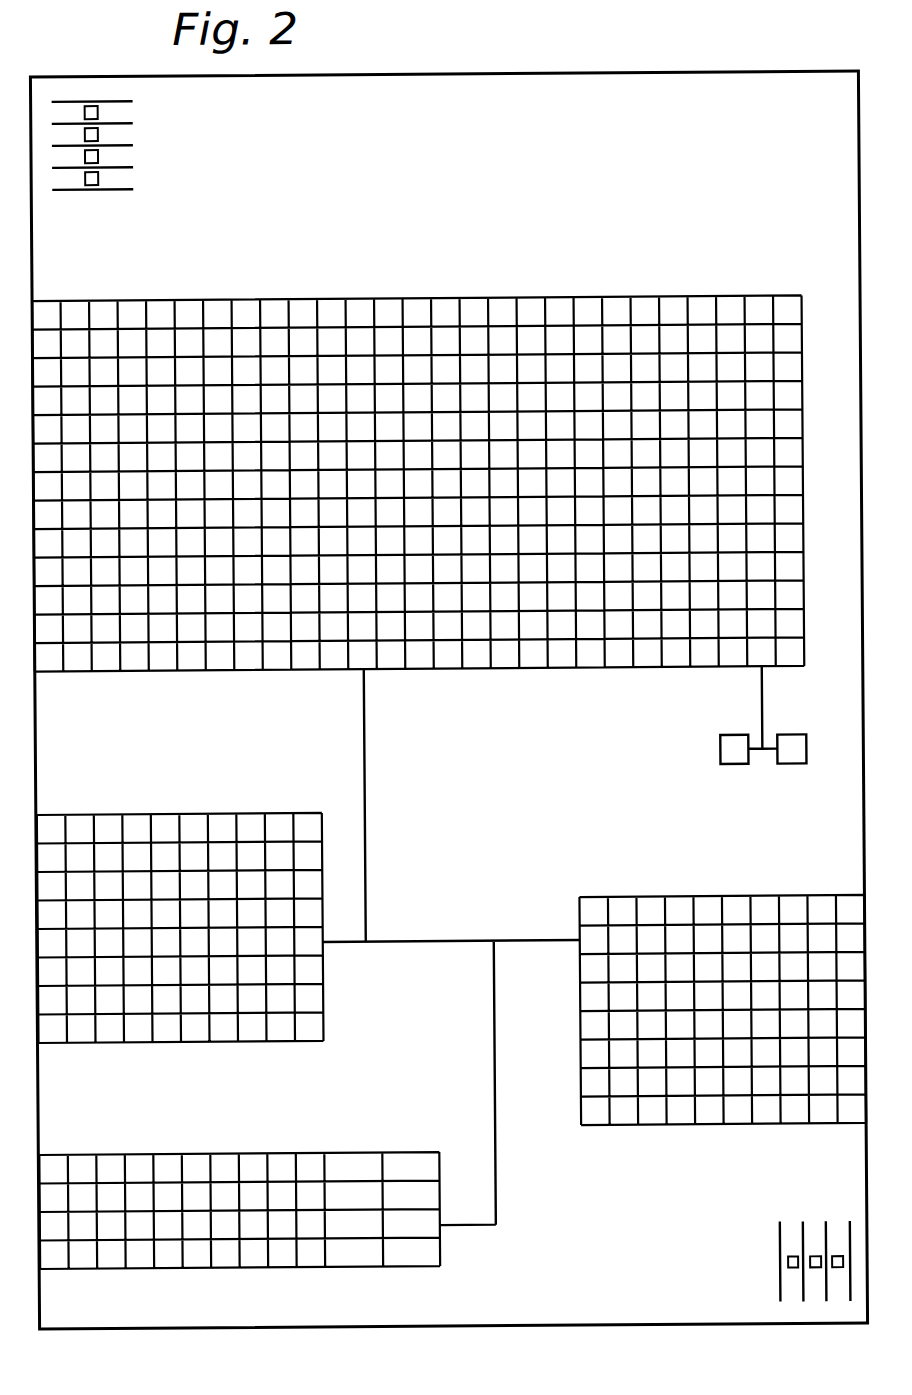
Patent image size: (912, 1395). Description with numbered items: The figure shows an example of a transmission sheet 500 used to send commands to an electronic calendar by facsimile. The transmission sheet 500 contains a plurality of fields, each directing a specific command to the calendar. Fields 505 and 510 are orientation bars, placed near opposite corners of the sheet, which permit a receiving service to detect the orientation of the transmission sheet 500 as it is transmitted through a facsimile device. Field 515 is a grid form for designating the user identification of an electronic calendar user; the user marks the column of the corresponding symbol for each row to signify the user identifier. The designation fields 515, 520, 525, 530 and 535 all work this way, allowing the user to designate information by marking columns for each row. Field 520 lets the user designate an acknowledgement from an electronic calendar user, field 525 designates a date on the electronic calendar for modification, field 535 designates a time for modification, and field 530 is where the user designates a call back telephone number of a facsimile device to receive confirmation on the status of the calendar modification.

The transmission sheet 500 is at (618, 74).
The orientation bar field 505 is at (138, 138).
The orientation bar field 510 is at (776, 1264).
The user identification grid field 515 is at (423, 668).
The acknowledgement designation field 520 is at (792, 766).
The date designation field 525 is at (321, 1002).
The call back telephone number field 530 is at (770, 1126).
The time designation field 535 is at (436, 1256).